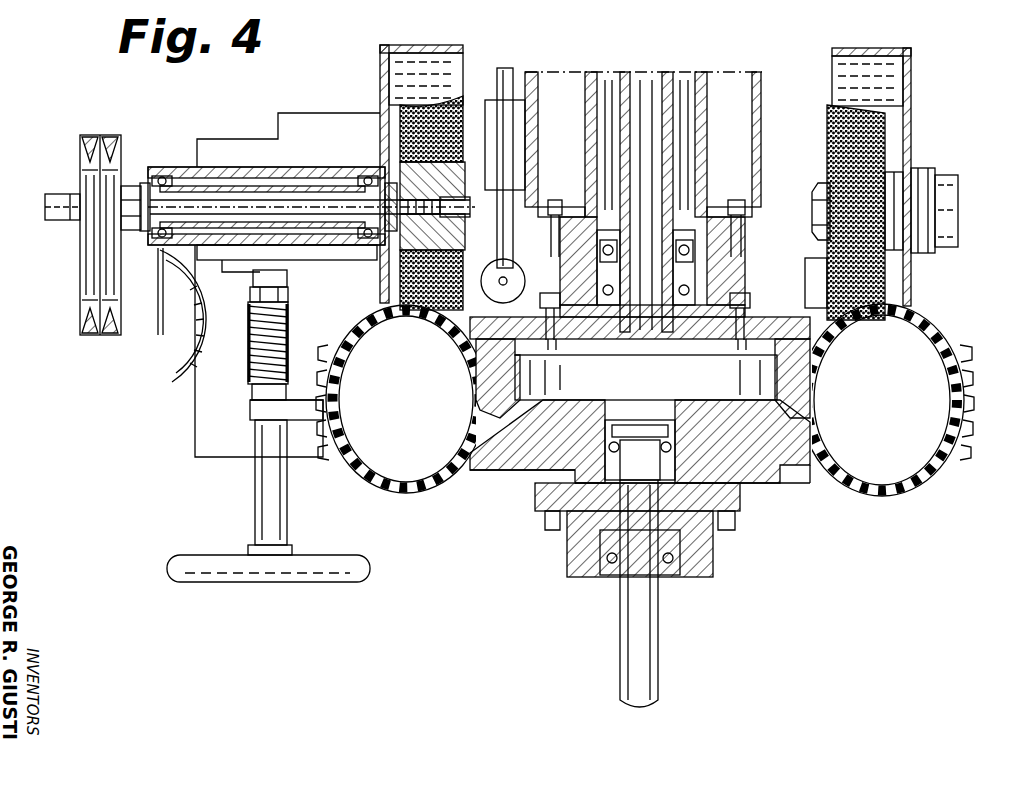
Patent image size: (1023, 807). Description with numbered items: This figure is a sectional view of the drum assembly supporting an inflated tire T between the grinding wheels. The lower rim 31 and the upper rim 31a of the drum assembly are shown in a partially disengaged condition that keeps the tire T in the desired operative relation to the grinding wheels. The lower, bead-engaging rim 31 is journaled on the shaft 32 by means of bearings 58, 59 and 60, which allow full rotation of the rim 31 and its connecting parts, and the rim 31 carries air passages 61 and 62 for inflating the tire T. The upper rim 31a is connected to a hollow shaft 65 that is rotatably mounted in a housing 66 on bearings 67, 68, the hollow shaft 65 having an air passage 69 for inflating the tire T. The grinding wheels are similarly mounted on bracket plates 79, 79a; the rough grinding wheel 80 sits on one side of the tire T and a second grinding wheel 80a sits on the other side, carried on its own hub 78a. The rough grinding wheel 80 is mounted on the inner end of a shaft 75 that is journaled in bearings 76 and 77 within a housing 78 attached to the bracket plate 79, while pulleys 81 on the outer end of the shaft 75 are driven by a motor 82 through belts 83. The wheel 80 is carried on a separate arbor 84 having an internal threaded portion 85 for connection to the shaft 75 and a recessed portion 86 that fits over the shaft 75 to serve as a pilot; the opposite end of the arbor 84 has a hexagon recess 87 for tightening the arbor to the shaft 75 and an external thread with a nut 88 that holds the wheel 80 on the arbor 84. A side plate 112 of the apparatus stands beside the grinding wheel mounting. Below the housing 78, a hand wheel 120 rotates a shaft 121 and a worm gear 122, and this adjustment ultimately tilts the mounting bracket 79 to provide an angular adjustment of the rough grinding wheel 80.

The lower rim 31 is at (795, 478).
The upper rim 31a is at (800, 372).
The shaft 32 is at (642, 660).
The bearing 58 is at (688, 432).
The bearing 59 is at (690, 525).
The bearing 60 is at (678, 572).
The air passage 61 is at (498, 445).
The air passage 62 is at (782, 452).
The hollow shaft 65 is at (688, 78).
The housing 66 is at (598, 288).
The bearing 67 is at (690, 292).
The bearing 68 is at (700, 240).
The air passage 69 is at (638, 85).
The shaft 75 is at (236, 205).
The bearing 76 is at (162, 176).
The bearing 77 is at (360, 138).
The housing 78 is at (250, 168).
The hub 78a is at (945, 200).
The bracket plate 79 is at (378, 288).
The bracket plate 79a is at (912, 280).
The rough grinding wheel 80 is at (466, 100).
The grinding wheel 80a is at (870, 147).
The pulleys 81 is at (108, 218).
The motor 82 is at (168, 330).
The belts 83 is at (110, 136).
The arbor 84 is at (462, 176).
The internal threaded portion 85 is at (368, 246).
The recessed portion 86 is at (390, 182).
The hexagon recess 87 is at (487, 200).
The nut 88 is at (472, 190).
The side plate 112 is at (540, 88).
The hand wheel 120 is at (264, 568).
The shaft 121 is at (272, 500).
The worm gear 122 is at (250, 358).
The tire T is at (922, 338).